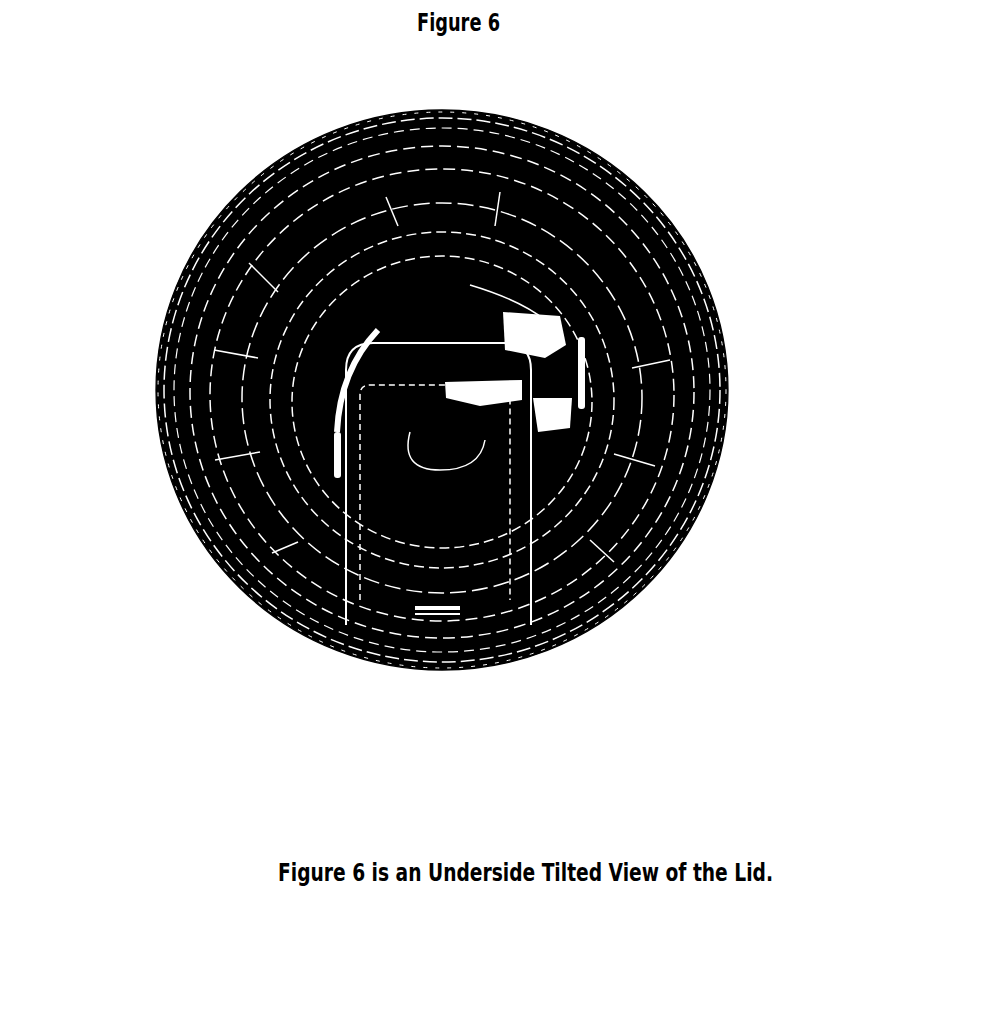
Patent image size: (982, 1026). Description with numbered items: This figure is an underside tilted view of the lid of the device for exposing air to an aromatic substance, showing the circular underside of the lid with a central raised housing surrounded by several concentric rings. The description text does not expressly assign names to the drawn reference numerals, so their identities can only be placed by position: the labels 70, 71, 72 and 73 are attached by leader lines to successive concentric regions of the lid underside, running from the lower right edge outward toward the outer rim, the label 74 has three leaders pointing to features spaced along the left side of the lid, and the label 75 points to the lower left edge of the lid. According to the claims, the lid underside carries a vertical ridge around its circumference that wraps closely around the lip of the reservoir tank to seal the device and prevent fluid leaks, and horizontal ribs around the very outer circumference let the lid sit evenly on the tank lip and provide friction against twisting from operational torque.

The lid 70 is at (668, 560).
The inner ring 71 is at (697, 462).
The sealing ring 72 is at (700, 397).
The outer flange 73 is at (700, 275).
The locking tabs 74 is at (167, 467).
The lid skirt 75 is at (210, 555).